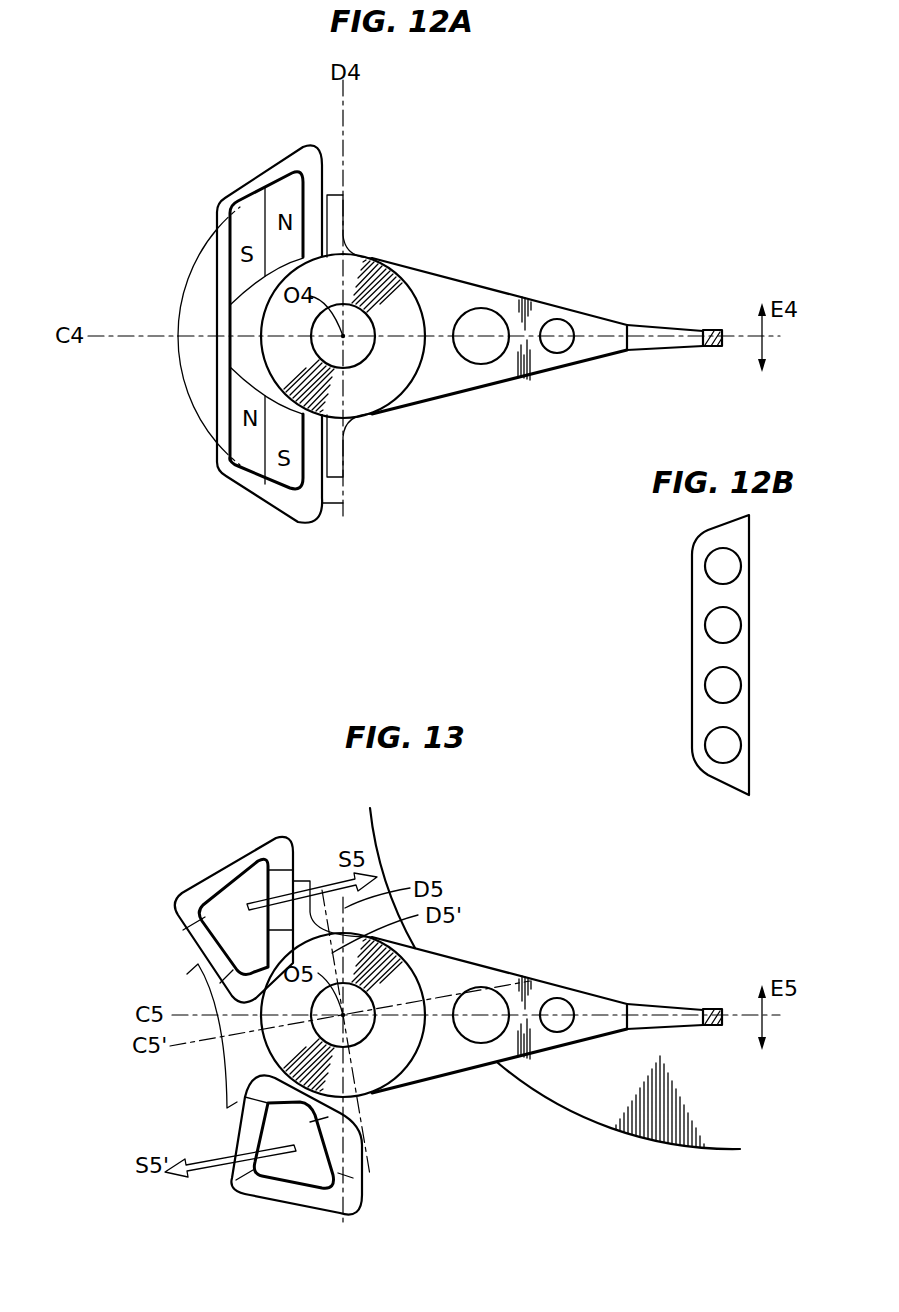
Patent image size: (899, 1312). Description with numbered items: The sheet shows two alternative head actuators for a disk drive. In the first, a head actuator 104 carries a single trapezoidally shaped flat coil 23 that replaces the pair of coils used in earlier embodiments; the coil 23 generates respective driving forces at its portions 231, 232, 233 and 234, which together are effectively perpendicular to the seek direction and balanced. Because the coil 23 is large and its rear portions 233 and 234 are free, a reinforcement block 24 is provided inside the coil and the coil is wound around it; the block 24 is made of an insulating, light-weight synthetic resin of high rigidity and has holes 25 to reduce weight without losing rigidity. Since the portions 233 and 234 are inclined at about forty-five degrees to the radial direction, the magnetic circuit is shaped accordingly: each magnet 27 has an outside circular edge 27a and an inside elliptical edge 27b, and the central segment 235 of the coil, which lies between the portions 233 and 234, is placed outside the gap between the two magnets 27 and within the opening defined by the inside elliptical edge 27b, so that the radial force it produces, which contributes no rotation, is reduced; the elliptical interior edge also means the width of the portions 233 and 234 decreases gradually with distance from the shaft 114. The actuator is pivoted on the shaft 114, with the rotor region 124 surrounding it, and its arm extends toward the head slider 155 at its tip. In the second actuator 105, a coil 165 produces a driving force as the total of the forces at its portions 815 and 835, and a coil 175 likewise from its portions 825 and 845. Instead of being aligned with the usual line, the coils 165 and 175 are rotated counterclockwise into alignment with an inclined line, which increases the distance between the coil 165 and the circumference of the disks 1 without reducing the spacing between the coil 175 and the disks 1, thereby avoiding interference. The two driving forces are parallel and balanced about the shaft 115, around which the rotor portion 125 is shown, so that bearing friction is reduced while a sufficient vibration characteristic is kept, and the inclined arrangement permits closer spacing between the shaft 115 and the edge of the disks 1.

In FIG. 13, the disks 1 is at (598, 1123).
In FIG. 12A, the flat coil 23 is at (243, 164).
In FIG. 12B, the reinforcement block 24 is at (735, 656).
In FIG. 12B, the holes 25 is at (728, 748).
In FIG. 12A, the magnet 27 is at (166, 353).
In FIG. 12A, the outside circular edge 27a is at (180, 318).
In FIG. 12A, the inside elliptical edge 27b is at (232, 364).
In FIG. 12A, the head actuator 104 is at (530, 276).
In FIG. 13, the head actuator 105 is at (530, 955).
In FIG. 12A, the shaft 114 is at (358, 348).
In FIG. 13, the shaft 115 is at (358, 1027).
In FIG. 12A, the rotor 124 is at (355, 397).
In FIG. 13, the rotor 125 is at (355, 1076).
In FIG. 13, the head slider 155 is at (712, 1027).
In FIG. 13, the coil 165 is at (222, 839).
In FIG. 13, the coil 175 is at (254, 1215).
In FIG. 12A, the coil portion 231 is at (305, 186).
In FIG. 12A, the coil portion 232 is at (310, 466).
In FIG. 12A, the coil portion 233 is at (222, 246).
In FIG. 12A, the coil portion 234 is at (222, 426).
In FIG. 12A, the central segment 235 is at (222, 318).
In FIG. 13, the coil portion 815 is at (279, 878).
In FIG. 13, the coil portion 825 is at (348, 1218).
In FIG. 13, the coil portion 835 is at (203, 933).
In FIG. 13, the coil portion 845 is at (240, 1137).